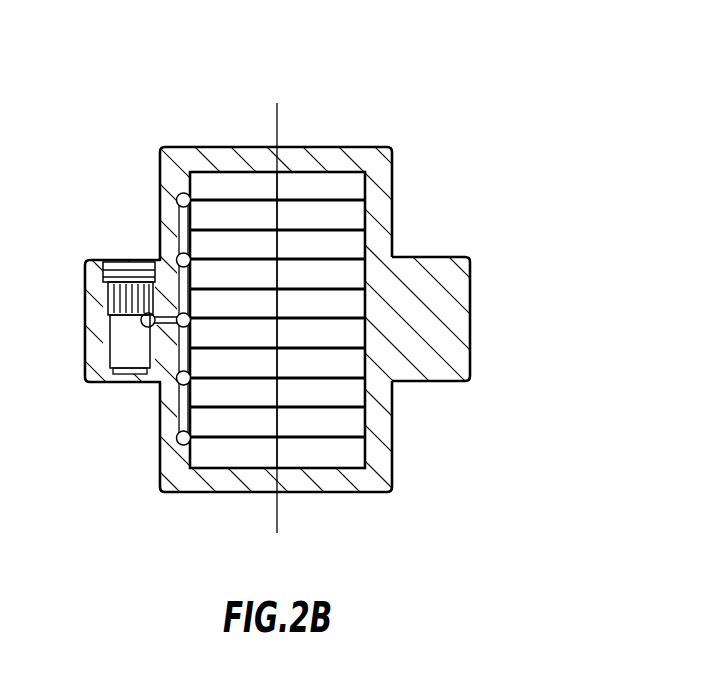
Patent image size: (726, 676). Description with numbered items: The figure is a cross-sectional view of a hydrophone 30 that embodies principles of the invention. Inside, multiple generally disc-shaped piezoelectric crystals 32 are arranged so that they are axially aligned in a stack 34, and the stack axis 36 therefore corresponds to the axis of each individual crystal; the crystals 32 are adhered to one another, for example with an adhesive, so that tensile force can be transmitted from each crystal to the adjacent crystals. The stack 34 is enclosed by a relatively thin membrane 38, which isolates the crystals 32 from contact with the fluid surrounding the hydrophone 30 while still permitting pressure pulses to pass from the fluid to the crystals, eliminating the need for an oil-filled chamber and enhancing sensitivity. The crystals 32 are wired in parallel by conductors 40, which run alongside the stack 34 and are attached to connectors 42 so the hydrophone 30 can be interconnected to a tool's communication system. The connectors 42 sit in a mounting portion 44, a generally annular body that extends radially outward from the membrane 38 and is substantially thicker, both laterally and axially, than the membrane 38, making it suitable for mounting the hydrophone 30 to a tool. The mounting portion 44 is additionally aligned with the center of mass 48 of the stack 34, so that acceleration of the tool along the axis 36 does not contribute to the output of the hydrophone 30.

The hydrophone 30 is at (548, 158).
The piezoelectric crystals 32 is at (365, 207).
The stack 34 is at (322, 171).
The stack axis 36 is at (275, 113).
The membrane 38 is at (362, 493).
The conductors 40 is at (173, 352).
The connectors 42 is at (123, 278).
The mounting portion 44 is at (470, 317).
The center of mass 48 is at (280, 320).